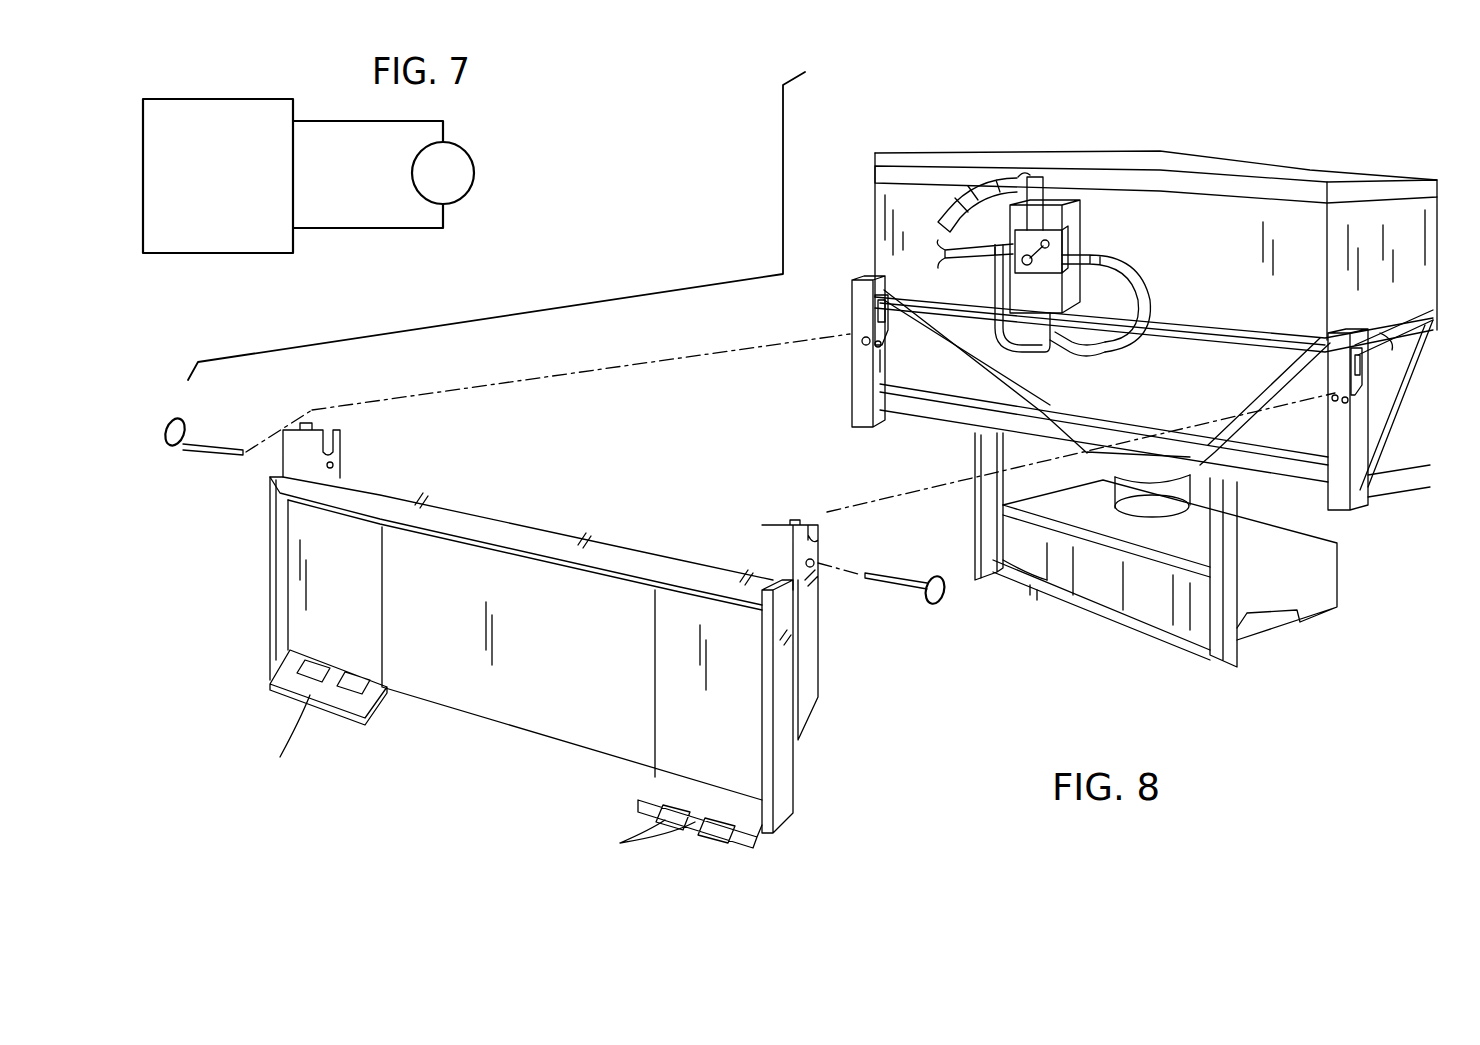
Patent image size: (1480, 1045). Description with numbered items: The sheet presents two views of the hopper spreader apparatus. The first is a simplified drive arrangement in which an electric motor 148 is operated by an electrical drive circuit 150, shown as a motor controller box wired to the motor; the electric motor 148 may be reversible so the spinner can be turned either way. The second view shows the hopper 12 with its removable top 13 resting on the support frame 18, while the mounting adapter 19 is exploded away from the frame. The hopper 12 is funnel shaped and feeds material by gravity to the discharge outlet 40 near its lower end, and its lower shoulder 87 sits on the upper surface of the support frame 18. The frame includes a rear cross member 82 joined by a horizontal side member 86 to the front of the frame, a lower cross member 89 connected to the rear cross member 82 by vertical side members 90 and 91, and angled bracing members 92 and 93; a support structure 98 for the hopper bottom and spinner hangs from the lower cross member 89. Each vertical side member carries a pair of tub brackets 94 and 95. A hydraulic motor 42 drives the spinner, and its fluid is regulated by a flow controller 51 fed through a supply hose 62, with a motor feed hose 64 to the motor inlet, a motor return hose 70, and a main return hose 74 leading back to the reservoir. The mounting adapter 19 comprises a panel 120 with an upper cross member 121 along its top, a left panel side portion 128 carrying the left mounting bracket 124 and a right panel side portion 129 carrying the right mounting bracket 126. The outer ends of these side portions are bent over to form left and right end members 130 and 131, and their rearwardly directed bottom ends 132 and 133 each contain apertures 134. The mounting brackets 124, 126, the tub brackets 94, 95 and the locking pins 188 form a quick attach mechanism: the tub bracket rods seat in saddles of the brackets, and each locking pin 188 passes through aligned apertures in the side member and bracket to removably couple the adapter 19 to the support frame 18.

In FIG. 7, the electrical drive circuit 150 is at (218, 98).
In FIG. 7, the electric motor 148 is at (475, 171).
In FIG. 8, the hopper 12 is at (1420, 262).
In FIG. 8, the removable top 13 is at (1345, 172).
In FIG. 8, the support frame 18 is at (1400, 410).
In FIG. 8, the mounting adapter 19 is at (860, 800).
In FIG. 8, the discharge outlet 40 is at (1150, 500).
In FIG. 8, the motor 42 is at (1120, 273).
In FIG. 8, the flow controller 51 is at (1078, 236).
In FIG. 8, the supply hydraulic line or hose 62 is at (963, 205).
In FIG. 8, the motor feed hose 64 is at (1118, 350).
In FIG. 8, the hydraulic motor return line or hose 70 is at (1000, 278).
In FIG. 8, the main return hydraulic line or hose 74 is at (935, 246).
In FIG. 8, the rear cross member 82 is at (1215, 320).
In FIG. 8, the horizontal side member 86 is at (1425, 312).
In FIG. 8, the lower shoulder 87 is at (1392, 330).
In FIG. 8, the lower cross member 89 is at (937, 420).
In FIG. 8, the vertical side member 90 is at (850, 350).
In FIG. 8, the vertical side member 91 is at (1357, 500).
In FIG. 8, the bracing member 92 is at (905, 350).
In FIG. 8, the bracing member 93 is at (1380, 440).
In FIG. 8, the tub bracket 94 is at (856, 302).
In FIG. 8, the tub bracket 95 is at (882, 374).
In FIG. 8, the support structure 98 is at (1282, 642).
In FIG. 8, the panel 120 is at (510, 636).
In FIG. 8, the upper cross member 121 is at (485, 546).
In FIG. 8, the left mounting bracket 124 is at (805, 683).
In FIG. 8, the right mounting bracket 126 is at (300, 453).
In FIG. 8, the left panel side portion 128 is at (672, 742).
In FIG. 8, the right panel side portion 129 is at (305, 618).
In FIG. 8, the left end member 130 is at (786, 750).
In FIG. 8, the right end member 131 is at (282, 548).
In FIG. 8, the bottom end 132 is at (737, 840).
In FIG. 8, the bottom end 133 is at (295, 690).
In FIG. 8, the apertures 134 is at (469, 777).
In FIG. 8, the locking pin 188 is at (205, 445).